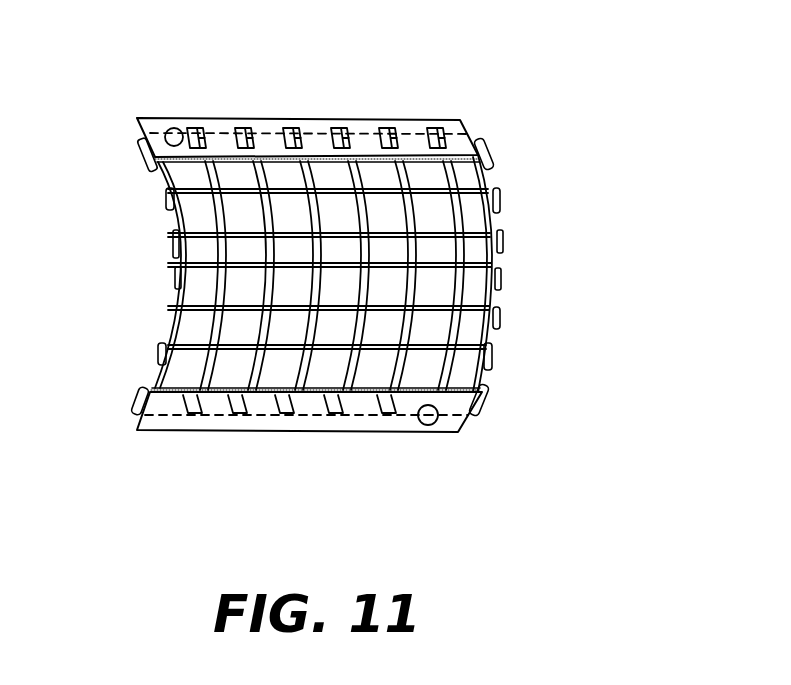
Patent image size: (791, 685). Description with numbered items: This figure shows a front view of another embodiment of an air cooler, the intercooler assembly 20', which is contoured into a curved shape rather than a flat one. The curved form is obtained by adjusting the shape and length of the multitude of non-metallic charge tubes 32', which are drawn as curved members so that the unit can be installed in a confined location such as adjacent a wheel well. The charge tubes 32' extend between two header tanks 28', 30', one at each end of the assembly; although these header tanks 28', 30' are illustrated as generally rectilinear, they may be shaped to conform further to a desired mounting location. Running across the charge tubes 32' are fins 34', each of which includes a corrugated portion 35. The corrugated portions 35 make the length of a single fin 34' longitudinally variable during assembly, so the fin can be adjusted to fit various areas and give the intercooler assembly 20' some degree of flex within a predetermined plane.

The intercooler assembly 20' is at (336, 261).
The header tank 28' is at (309, 447).
The header tank 30' is at (308, 109).
The non-metallic charge tube 32' is at (363, 276).
The fin 34' is at (390, 275).
The corrugated portion 35 is at (170, 243).